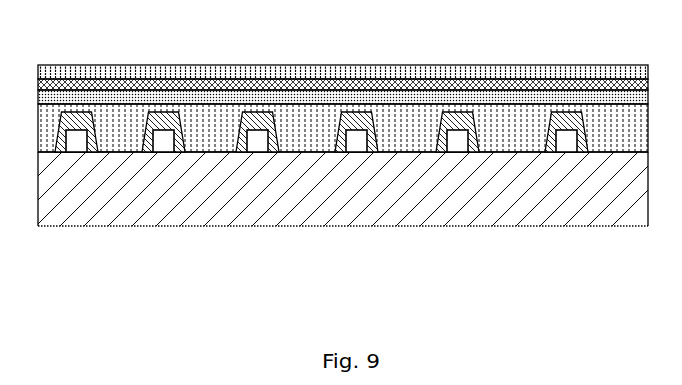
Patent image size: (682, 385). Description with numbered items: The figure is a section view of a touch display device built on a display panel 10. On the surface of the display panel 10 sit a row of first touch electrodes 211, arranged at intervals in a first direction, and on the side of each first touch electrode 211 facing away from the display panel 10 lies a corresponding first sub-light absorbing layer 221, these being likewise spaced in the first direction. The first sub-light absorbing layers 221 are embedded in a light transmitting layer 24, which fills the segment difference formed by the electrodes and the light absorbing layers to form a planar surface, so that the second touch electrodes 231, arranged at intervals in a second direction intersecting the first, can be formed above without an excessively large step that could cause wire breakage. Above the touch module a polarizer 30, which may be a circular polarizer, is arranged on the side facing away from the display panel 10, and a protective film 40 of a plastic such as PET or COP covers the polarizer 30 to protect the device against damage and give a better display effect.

The display panel 10 is at (237, 210).
The light transmitting layer 24 is at (222, 127).
The polarizer 30 is at (303, 78).
The protective film 40 is at (468, 72).
The first touch electrode 211 is at (360, 112).
The first sub-light absorbing layer 221 is at (567, 130).
The second touch electrode 231 is at (122, 92).